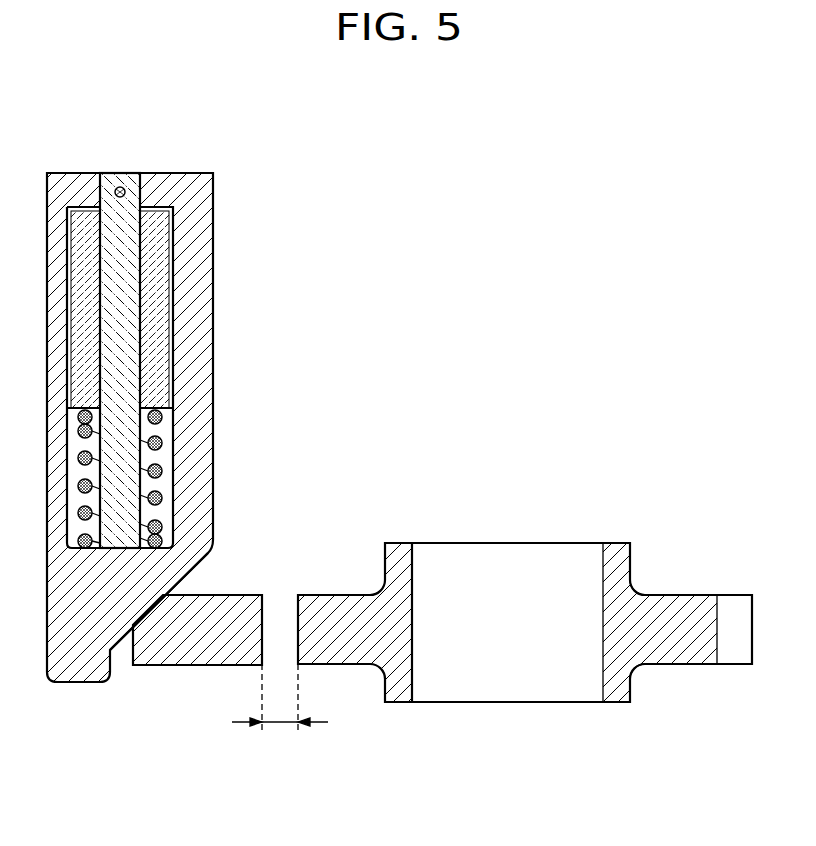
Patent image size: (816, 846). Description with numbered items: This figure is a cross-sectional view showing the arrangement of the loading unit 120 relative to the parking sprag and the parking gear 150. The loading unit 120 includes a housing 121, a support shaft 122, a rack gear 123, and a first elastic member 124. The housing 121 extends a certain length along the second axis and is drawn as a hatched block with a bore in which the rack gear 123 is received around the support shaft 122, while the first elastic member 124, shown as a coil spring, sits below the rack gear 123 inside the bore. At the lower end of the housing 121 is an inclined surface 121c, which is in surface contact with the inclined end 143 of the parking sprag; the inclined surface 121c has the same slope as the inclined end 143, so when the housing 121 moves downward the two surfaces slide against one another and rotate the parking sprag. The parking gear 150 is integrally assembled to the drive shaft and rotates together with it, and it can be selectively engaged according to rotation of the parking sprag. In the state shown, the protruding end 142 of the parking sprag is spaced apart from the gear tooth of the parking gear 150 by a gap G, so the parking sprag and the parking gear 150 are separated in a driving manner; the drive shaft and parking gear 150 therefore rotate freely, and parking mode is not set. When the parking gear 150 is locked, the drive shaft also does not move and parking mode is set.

The loading unit 120 is at (233, 181).
The housing 121 is at (197, 252).
The inclined surface 121c is at (185, 582).
The support shaft 122 is at (120, 433).
The rack gear 123 is at (165, 366).
The first elastic member 124 is at (160, 470).
The protruding end 142 is at (260, 632).
The inclined end 143 is at (166, 627).
The parking gear 150 is at (340, 640).
The gap G is at (280, 710).